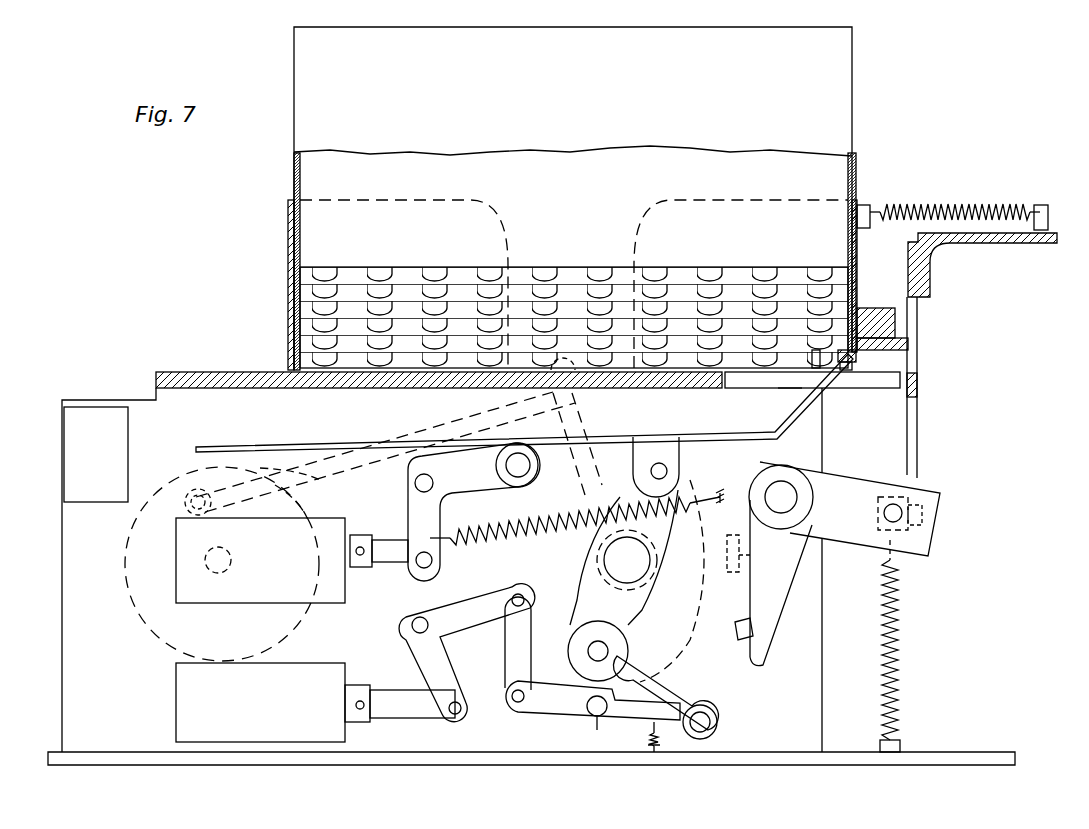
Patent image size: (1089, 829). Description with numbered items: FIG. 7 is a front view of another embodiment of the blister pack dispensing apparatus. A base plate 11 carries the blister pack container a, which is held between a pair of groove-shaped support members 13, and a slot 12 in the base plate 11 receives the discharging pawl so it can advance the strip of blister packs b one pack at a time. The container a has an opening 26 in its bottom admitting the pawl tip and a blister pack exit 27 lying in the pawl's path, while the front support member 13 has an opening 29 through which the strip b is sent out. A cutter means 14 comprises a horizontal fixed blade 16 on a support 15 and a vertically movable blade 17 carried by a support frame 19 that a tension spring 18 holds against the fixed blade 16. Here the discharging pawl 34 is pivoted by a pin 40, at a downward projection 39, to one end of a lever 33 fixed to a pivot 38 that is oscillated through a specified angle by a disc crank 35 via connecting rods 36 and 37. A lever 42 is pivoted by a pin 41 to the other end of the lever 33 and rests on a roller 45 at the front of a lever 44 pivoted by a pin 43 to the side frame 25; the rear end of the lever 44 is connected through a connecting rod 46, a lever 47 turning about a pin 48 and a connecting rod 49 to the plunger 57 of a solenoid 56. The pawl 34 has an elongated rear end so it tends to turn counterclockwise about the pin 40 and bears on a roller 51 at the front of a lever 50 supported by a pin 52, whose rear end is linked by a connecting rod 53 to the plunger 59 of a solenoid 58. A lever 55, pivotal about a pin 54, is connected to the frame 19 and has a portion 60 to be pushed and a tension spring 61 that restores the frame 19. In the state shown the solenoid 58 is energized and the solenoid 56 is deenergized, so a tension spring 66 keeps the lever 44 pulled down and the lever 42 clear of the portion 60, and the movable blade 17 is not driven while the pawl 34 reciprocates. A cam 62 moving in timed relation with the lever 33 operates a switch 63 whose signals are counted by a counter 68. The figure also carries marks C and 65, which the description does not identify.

The blister pack container a is at (856, 148).
The strip of blister packs b is at (574, 268).
The pivot C is at (832, 385).
The base plate 11 is at (400, 390).
The slot 12 is at (750, 388).
The support members 13 is at (291, 246).
The cutter means 14 is at (930, 366).
The support 15 is at (877, 322).
The horizontal blade 16 is at (900, 345).
The vertically movable blade 17 is at (918, 394).
The tension spring 18 is at (1000, 208).
The support frame 19 is at (912, 458).
The side frame 25 is at (822, 636).
The opening 26 is at (790, 388).
The blister pack exit 27 is at (846, 372).
The opening 29 is at (857, 360).
The lever 33 is at (574, 572).
The discharging pawl 34 is at (793, 430).
The disc crank 35 is at (298, 494).
The connecting rod 36 is at (330, 447).
The connecting rod 37 is at (585, 414).
The pivot 38 is at (610, 580).
The projection 39 is at (666, 437).
The pin 40 is at (667, 471).
The pin 41 is at (606, 644).
The lever 42 is at (676, 664).
The pin 43 is at (594, 716).
The lever 44 is at (548, 712).
The roller 45 is at (718, 722).
The connecting rod 46 is at (531, 655).
The lever 47 is at (470, 600).
The pin 48 is at (412, 626).
The connecting rod 49 is at (392, 692).
The lever 50 is at (477, 480).
The roller 51 is at (531, 466).
The pin 52 is at (414, 484).
The connecting rod 53 is at (386, 546).
The pin 54 is at (798, 497).
The lever 55 is at (872, 488).
The solenoid 56 is at (176, 703).
The plunger 57 is at (359, 685).
The solenoid 58 is at (176, 578).
The plunger 59 is at (358, 535).
The portion to be pushed 60 is at (740, 626).
The tension spring 61 is at (898, 680).
The cam 62 is at (728, 532).
The switch 63 is at (749, 547).
The spring 65 is at (525, 532).
The tension spring 66 is at (648, 734).
The counter 68 is at (128, 466).